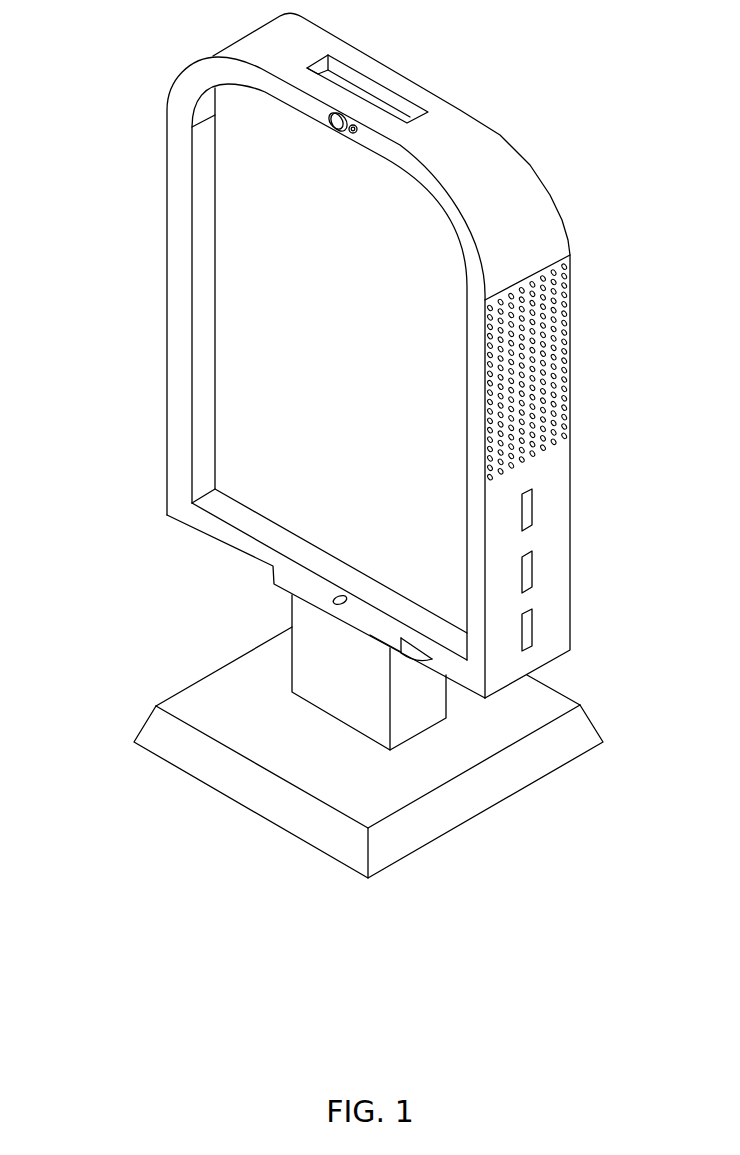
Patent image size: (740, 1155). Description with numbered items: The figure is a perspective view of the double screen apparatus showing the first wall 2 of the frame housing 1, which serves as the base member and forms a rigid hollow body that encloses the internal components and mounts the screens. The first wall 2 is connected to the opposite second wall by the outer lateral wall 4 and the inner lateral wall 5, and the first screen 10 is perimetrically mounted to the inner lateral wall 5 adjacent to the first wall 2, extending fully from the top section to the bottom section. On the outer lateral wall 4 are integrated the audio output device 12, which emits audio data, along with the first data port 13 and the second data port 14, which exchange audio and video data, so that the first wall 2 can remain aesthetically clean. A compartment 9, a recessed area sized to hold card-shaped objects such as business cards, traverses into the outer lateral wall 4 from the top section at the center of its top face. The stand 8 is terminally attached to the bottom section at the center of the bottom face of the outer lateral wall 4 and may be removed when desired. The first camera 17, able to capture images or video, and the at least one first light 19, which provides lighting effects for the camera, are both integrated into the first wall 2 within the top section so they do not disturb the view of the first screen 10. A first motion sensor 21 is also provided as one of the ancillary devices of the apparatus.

The frame housing 1 is at (124, 374).
The first wall 2 is at (172, 196).
The outer lateral wall 4 is at (470, 170).
The inner lateral wall 5 is at (197, 257).
The stand 8 is at (162, 745).
The compartment 9 is at (374, 78).
The first screen 10 is at (320, 388).
The audio output device 12 is at (553, 385).
The first data port 13 is at (530, 505).
The second data port 14 is at (530, 573).
The first camera 17 is at (334, 119).
The first light 19 is at (352, 134).
The first motion sensor 21 is at (331, 599).